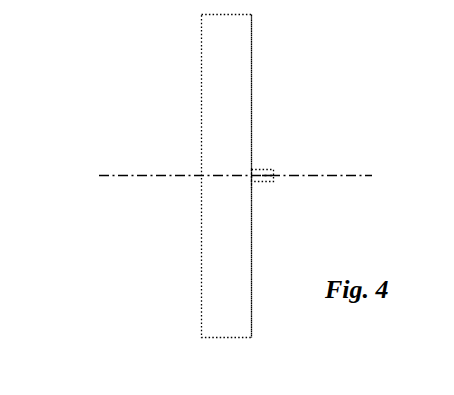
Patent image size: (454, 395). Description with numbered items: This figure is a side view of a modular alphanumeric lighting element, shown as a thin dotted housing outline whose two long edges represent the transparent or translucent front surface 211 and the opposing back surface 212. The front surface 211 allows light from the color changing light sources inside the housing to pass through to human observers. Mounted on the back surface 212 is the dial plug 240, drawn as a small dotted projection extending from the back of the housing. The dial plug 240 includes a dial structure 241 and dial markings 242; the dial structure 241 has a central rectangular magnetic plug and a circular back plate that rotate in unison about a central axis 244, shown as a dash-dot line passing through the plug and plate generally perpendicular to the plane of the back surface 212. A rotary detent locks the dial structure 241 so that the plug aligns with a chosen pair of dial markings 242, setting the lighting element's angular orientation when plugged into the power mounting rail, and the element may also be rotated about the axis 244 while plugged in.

The front surface 211 is at (172, 176).
The back surface 212 is at (294, 176).
The dial plug 240 is at (317, 147).
The dial structure 241 is at (310, 207).
The dial markings 242 is at (320, 192).
The central axis 244 is at (221, 152).